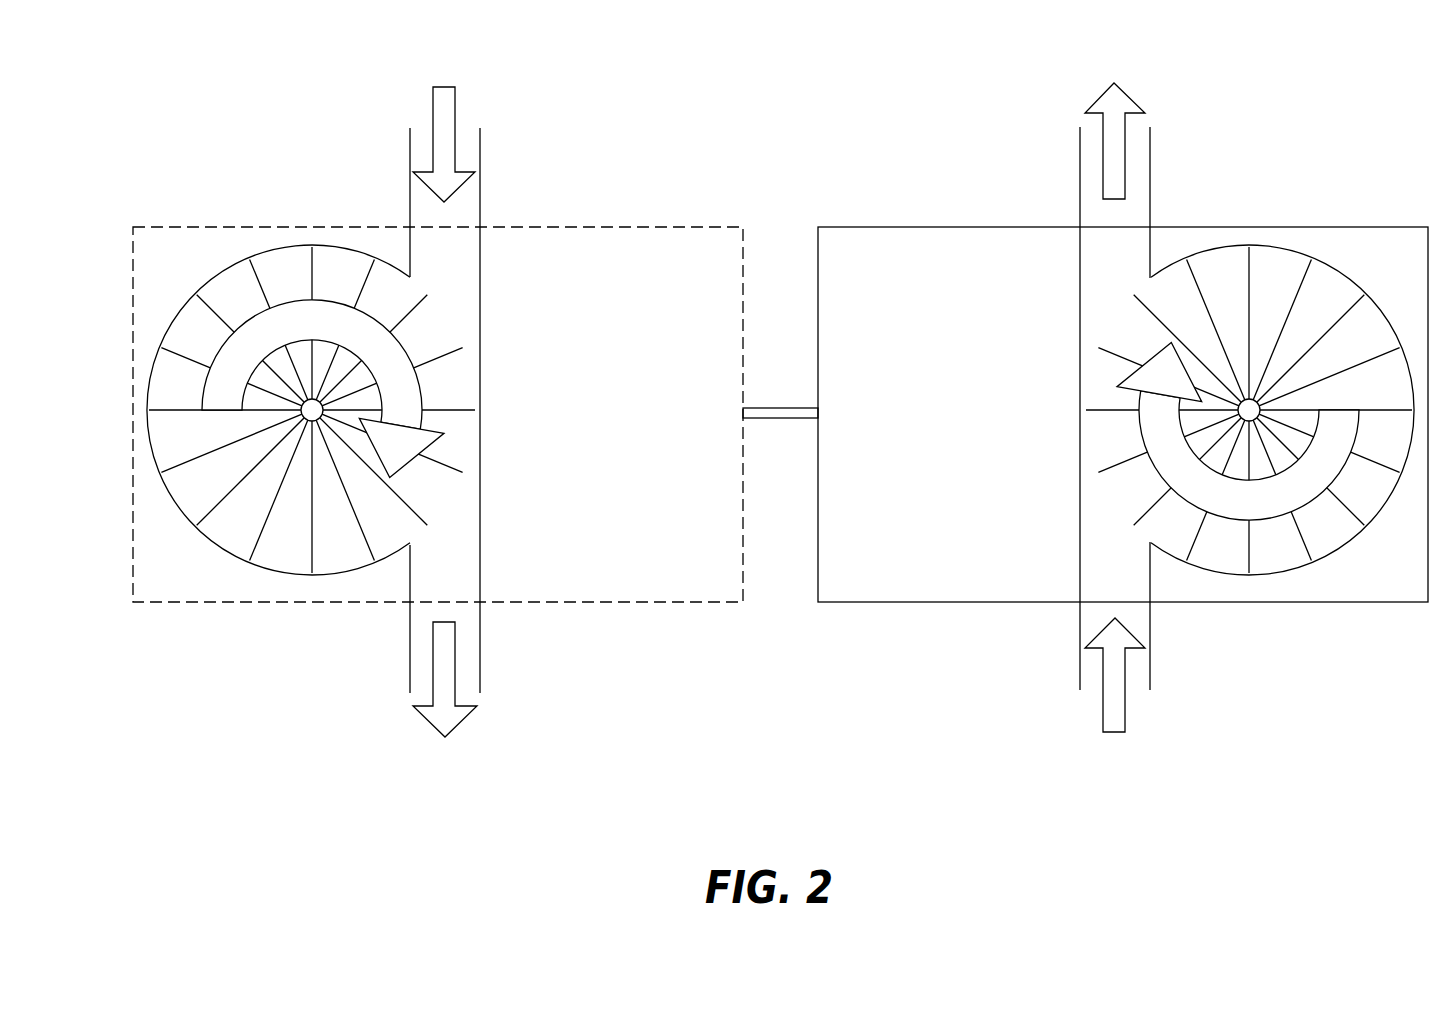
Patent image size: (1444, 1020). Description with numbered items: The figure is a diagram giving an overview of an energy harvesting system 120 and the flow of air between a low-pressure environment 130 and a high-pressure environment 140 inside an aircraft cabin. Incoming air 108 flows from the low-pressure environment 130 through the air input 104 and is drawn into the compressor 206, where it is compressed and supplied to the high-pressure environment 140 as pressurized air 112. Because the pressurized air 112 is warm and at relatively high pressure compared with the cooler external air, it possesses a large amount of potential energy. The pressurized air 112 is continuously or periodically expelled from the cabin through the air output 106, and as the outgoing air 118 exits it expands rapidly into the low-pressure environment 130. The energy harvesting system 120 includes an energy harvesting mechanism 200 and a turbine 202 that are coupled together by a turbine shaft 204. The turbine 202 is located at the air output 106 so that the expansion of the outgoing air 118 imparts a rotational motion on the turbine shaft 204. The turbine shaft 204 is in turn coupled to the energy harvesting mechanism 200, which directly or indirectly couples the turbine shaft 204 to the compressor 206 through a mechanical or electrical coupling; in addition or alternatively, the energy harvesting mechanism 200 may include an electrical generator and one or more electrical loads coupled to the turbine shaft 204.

The energy harvesting system 120 is at (210, 80).
The low-pressure environment 130 is at (785, 61).
The high-pressure environment 140 is at (786, 767).
The air input 104 is at (467, 137).
The air output 106 is at (1135, 137).
The incoming air 108 is at (444, 129).
The pressurized air 112 is at (779, 692).
The outgoing air 118 is at (1115, 128).
The energy harvesting mechanism 200 is at (577, 233).
The turbine 202 is at (985, 233).
The turbine shaft 204 is at (760, 413).
The compressor 206 is at (202, 441).